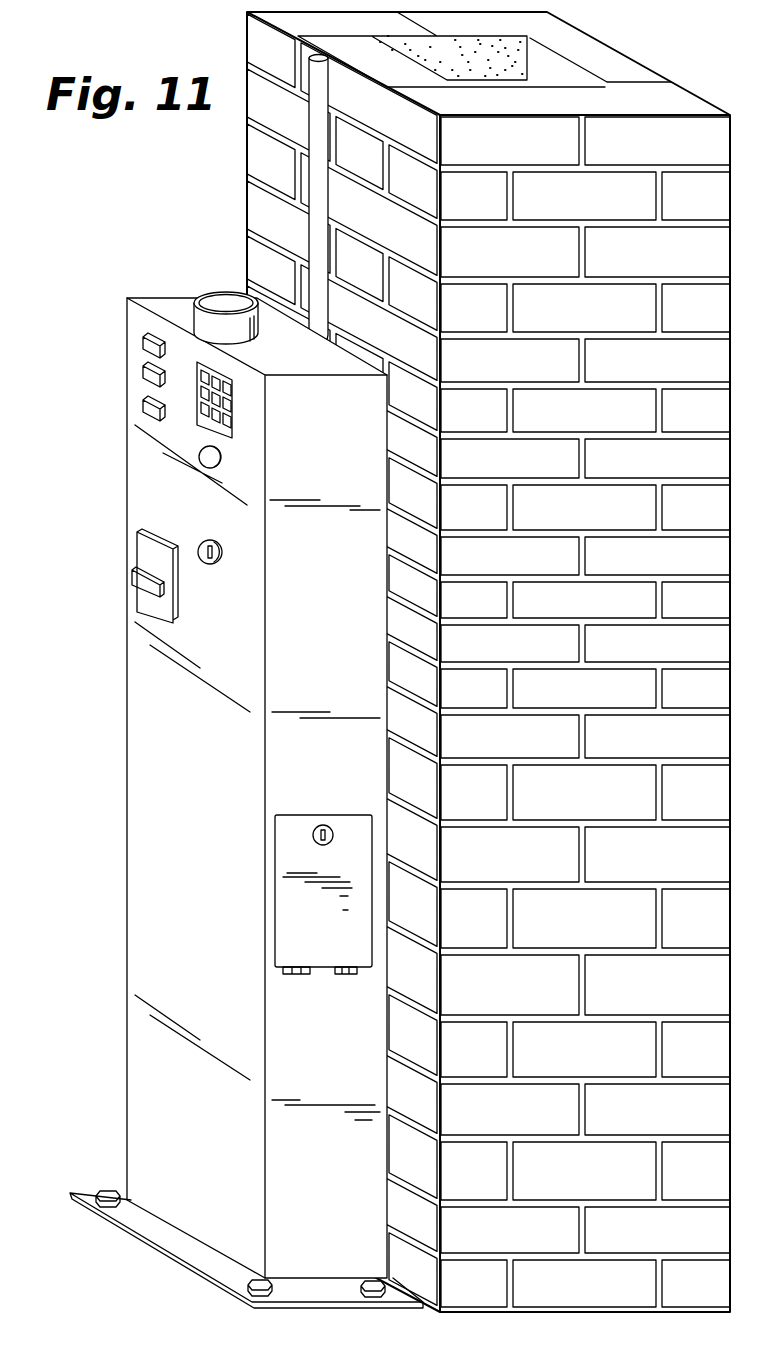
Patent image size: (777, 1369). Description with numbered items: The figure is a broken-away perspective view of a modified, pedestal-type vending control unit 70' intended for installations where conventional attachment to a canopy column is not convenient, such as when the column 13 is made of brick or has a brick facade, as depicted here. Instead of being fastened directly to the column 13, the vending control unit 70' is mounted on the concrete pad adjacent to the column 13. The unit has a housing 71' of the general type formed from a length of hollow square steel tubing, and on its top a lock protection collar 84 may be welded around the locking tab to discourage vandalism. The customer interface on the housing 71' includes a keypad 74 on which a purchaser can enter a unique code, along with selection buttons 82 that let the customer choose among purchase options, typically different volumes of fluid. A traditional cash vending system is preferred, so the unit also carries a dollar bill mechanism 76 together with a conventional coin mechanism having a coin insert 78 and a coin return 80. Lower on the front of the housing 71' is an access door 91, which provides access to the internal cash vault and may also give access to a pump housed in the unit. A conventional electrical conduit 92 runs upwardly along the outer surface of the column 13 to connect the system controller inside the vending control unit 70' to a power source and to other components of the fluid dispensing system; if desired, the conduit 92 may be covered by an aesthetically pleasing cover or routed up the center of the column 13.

The column 13 is at (258, 148).
The electrical conduit 92 is at (320, 182).
The lock protection collar 84 is at (214, 292).
The selection buttons 82 is at (143, 409).
The keypad 74 is at (233, 412).
The coin insert 78 is at (222, 459).
The housing 71' is at (226, 788).
The vending control unit 70' is at (234, 803).
The coin return 80 is at (223, 553).
The dollar bill mechanism 76 is at (175, 608).
The access door 91 is at (282, 893).